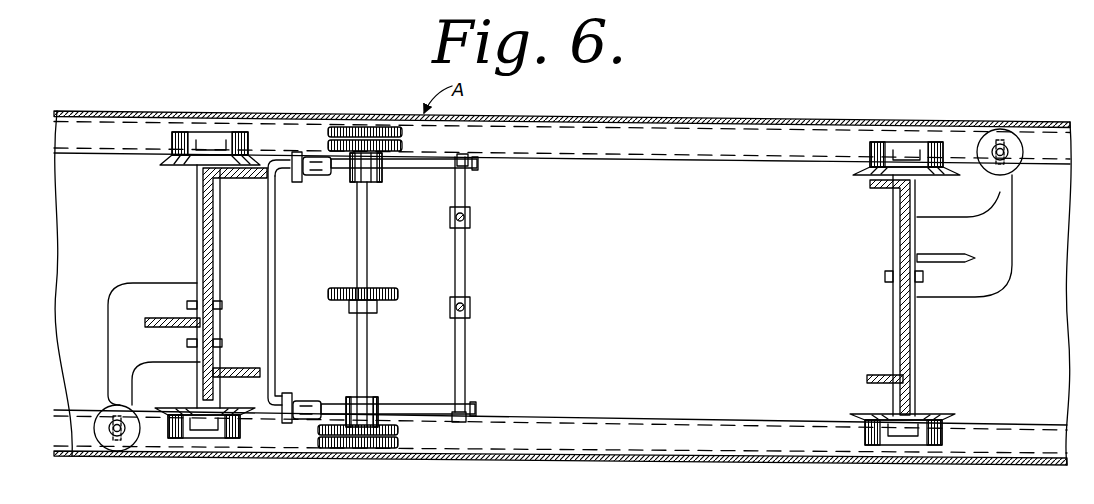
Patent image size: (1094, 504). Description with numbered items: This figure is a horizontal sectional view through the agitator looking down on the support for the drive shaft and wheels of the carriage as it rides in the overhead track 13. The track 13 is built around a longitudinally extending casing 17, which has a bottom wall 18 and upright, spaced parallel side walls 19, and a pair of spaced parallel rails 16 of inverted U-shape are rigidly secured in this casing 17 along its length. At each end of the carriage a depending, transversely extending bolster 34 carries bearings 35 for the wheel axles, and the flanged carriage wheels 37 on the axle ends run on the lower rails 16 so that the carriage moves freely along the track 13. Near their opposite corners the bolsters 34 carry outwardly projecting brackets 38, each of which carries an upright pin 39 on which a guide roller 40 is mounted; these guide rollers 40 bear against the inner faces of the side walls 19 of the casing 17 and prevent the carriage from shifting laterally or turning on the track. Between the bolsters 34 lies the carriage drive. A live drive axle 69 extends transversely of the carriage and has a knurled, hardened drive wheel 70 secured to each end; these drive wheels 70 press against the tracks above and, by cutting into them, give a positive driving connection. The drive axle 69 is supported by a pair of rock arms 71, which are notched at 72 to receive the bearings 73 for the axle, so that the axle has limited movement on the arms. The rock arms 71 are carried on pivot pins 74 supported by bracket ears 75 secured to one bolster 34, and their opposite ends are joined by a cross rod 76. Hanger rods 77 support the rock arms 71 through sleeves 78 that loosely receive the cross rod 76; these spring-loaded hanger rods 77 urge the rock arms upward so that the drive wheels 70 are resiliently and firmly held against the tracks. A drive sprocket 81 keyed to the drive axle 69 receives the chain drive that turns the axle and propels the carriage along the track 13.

The overhead track 13 is at (810, 119).
The rails 16 is at (632, 138).
The casing 17 is at (843, 121).
The bottom wall 18 is at (683, 178).
The side walls 19 is at (648, 117).
The bolsters 34 is at (205, 240).
The bearings 35 is at (197, 206).
The flanged carriage wheels 37 is at (163, 165).
The brackets 38 is at (130, 298).
The upright pins 39 is at (113, 427).
The guide rollers 40 is at (110, 400).
The live drive axle 69 is at (368, 260).
The drive wheels 70 is at (402, 135).
The rock arms 71 is at (405, 167).
The notches 72 is at (350, 177).
The bearings 73 is at (372, 179).
The pivot pins 74 is at (319, 157).
The bracket ears 75 is at (275, 405).
The cross rod 76 is at (455, 352).
The hanger rods 77 is at (470, 216).
The sleeves 78 is at (470, 228).
The drive sprocket 81 is at (396, 297).